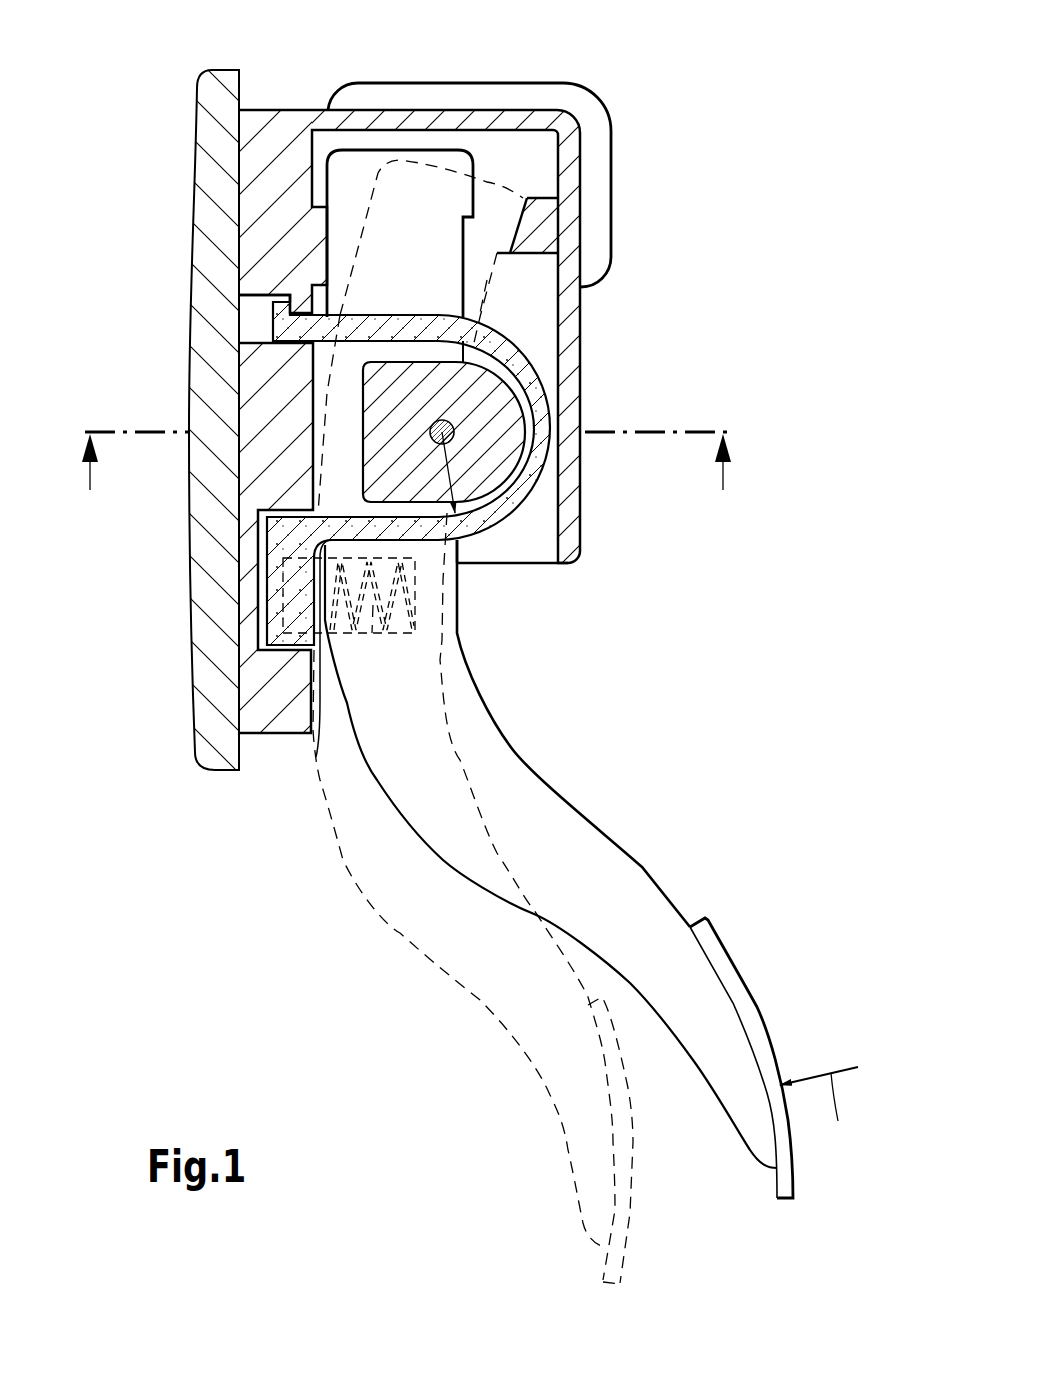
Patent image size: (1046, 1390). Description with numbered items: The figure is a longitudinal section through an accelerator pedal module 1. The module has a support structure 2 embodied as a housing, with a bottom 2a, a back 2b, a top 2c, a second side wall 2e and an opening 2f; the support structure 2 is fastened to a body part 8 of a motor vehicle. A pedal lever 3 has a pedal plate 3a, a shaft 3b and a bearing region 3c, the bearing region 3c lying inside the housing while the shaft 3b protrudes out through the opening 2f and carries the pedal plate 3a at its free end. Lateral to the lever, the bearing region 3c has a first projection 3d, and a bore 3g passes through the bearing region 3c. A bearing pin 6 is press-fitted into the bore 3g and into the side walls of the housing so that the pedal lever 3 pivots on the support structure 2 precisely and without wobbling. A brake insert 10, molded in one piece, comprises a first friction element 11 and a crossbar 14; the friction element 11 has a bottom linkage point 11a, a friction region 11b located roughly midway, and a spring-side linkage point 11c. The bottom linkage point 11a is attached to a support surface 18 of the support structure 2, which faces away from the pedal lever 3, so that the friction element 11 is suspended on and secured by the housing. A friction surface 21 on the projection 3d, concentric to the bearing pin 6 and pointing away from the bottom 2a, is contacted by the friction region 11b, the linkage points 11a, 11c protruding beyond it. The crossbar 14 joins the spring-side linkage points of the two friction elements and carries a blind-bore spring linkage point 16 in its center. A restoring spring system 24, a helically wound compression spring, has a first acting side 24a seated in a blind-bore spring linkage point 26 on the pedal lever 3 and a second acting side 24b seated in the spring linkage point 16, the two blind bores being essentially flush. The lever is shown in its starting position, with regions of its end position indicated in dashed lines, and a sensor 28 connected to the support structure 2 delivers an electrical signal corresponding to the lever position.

The accelerator pedal module 1 is at (699, 179).
The support structure 2 is at (388, 369).
The bottom 2a is at (247, 215).
The back 2b is at (409, 112).
The top 2c is at (573, 338).
The second side wall 2e is at (527, 308).
The opening 2f is at (503, 553).
The pedal lever 3 is at (465, 722).
The pedal plate 3a is at (748, 1000).
The shaft 3b is at (500, 759).
The bearing region 3c is at (340, 393).
The first projection 3d is at (503, 397).
The bore 3g is at (455, 428).
The bearing pin 6 is at (463, 547).
The body part 8 is at (207, 247).
The brake insert 10 is at (384, 473).
The first friction element 11 is at (384, 473).
The bottom linkage point 11a is at (273, 318).
The friction region 11b is at (540, 468).
The spring-side linkage point 11c is at (327, 513).
The crossbar 14 is at (290, 610).
The spring linkage point 16 is at (282, 569).
The support surface 18 is at (270, 298).
The friction surface 21 is at (515, 545).
The restoring spring system 24 is at (315, 757).
The first acting side 24a is at (397, 607).
The second acting side 24b is at (258, 648).
The spring linkage point 26 is at (372, 633).
The sensor 28 is at (521, 88).